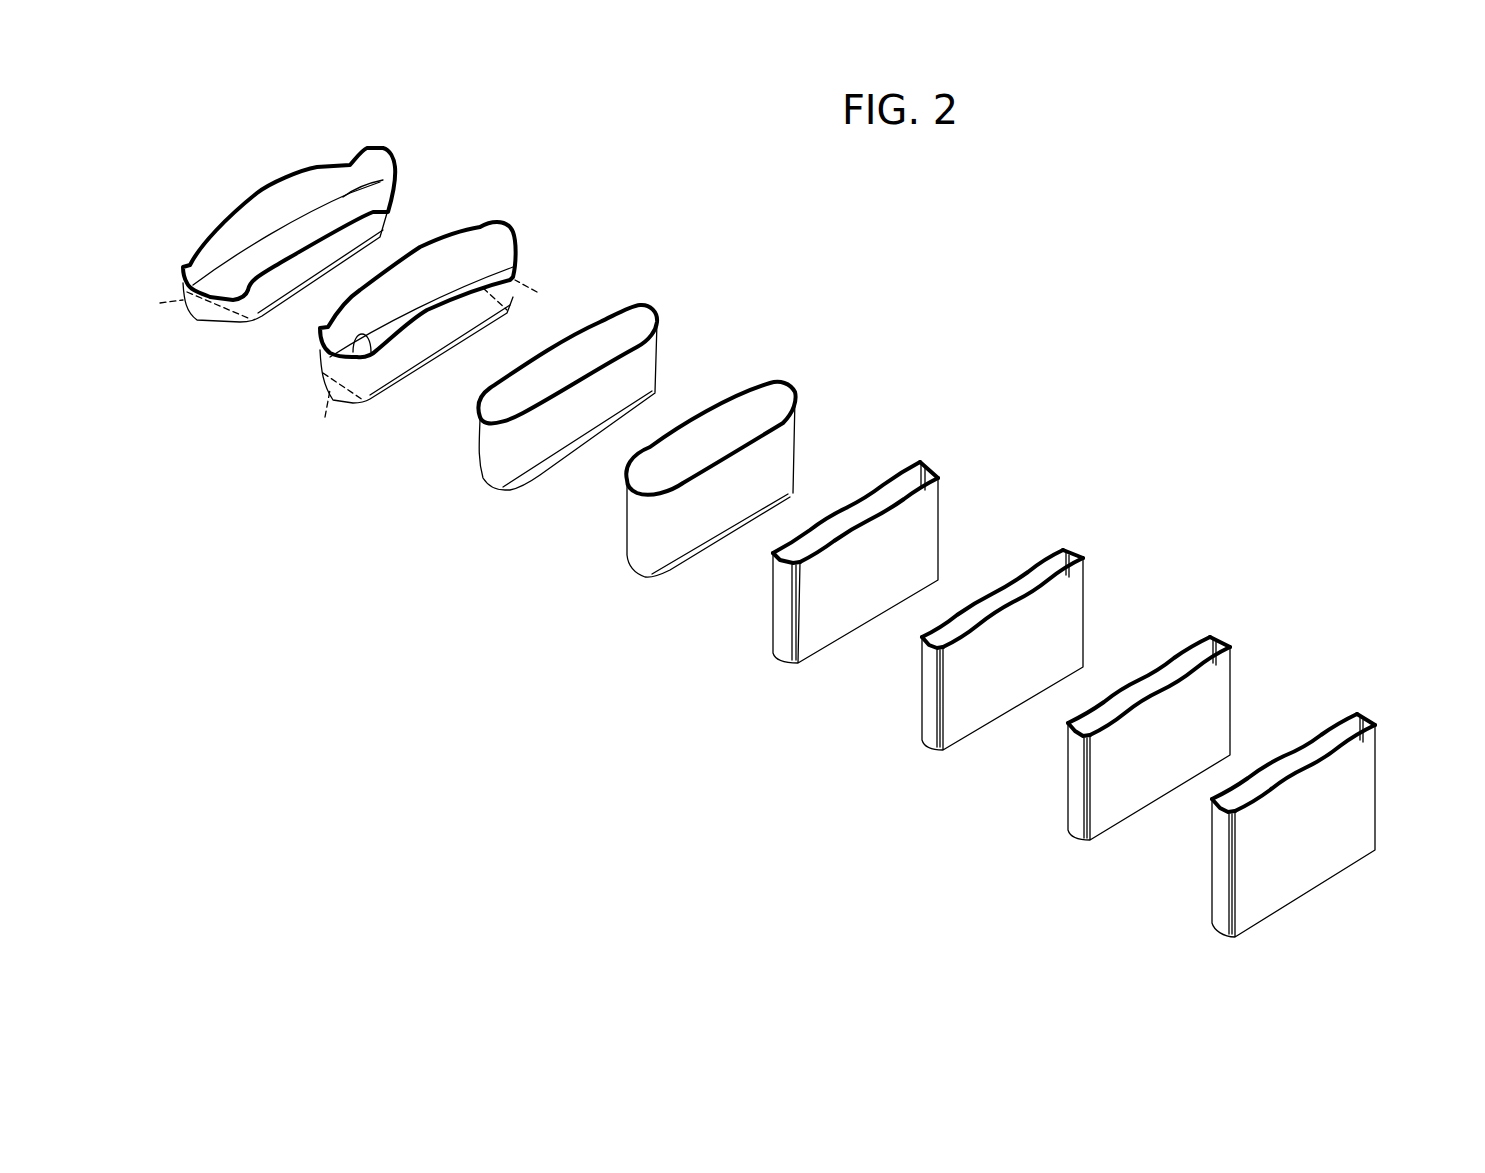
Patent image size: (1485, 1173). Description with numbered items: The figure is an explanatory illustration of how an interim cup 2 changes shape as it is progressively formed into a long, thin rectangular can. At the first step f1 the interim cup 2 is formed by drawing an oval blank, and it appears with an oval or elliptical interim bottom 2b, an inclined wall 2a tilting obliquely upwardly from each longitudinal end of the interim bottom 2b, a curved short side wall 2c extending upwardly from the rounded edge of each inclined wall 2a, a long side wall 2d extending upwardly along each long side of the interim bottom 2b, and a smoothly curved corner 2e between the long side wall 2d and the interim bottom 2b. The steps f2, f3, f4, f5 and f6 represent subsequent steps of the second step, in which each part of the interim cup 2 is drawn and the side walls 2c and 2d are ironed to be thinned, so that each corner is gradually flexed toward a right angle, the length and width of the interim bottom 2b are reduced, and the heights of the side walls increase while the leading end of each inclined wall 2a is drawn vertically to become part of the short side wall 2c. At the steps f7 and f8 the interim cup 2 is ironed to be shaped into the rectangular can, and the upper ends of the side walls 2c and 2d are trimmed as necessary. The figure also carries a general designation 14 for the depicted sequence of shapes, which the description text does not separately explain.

The interim cup 2 is at (409, 136).
The inclined wall 2a is at (349, 279).
The interim bottom 2b is at (320, 300).
The short side wall 2c is at (792, 551).
The long side wall 2d is at (820, 478).
The curved corner 2e is at (505, 448).
The cell stack 14 is at (1190, 583).
The first step f1 is at (197, 327).
The subsequent step of the second step f2 is at (312, 390).
The subsequent step of the second step f3 is at (462, 467).
The subsequent step of the second step f4 is at (603, 547).
The subsequent step of the second step f5 is at (763, 628).
The subsequent step of the second step f6 is at (907, 715).
The ironing step f7 is at (1060, 830).
The ironing step f8 is at (1203, 928).